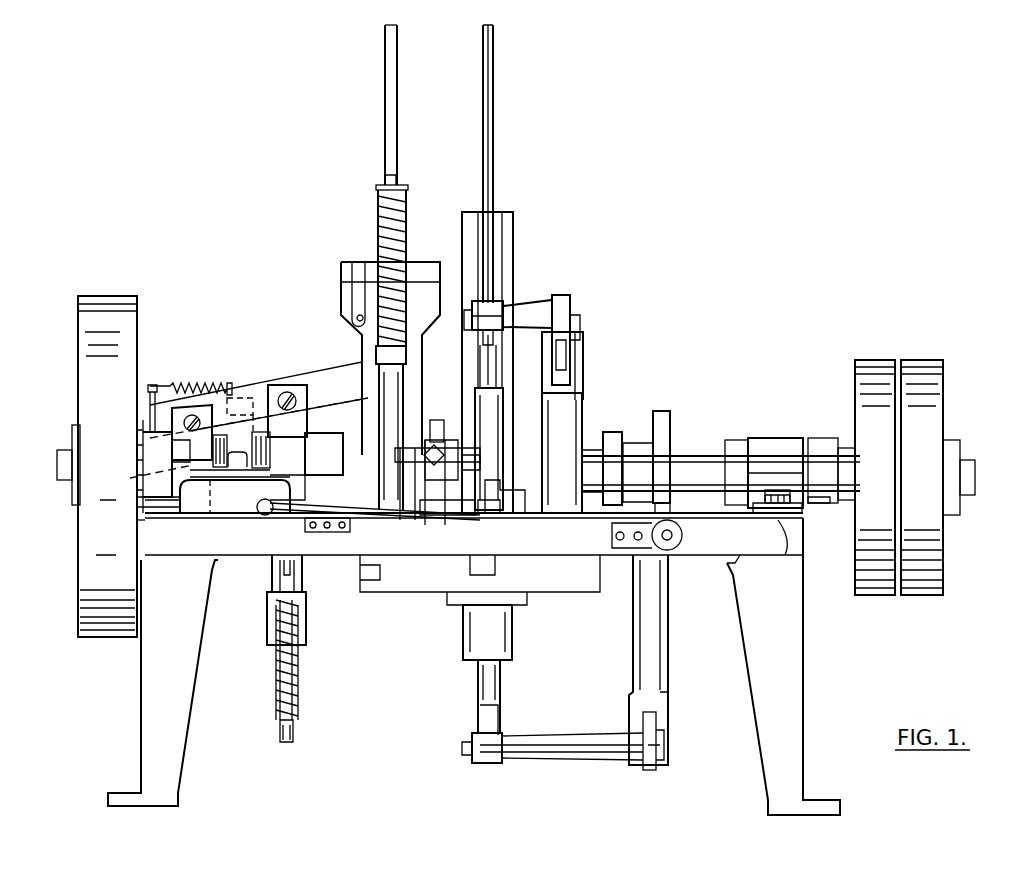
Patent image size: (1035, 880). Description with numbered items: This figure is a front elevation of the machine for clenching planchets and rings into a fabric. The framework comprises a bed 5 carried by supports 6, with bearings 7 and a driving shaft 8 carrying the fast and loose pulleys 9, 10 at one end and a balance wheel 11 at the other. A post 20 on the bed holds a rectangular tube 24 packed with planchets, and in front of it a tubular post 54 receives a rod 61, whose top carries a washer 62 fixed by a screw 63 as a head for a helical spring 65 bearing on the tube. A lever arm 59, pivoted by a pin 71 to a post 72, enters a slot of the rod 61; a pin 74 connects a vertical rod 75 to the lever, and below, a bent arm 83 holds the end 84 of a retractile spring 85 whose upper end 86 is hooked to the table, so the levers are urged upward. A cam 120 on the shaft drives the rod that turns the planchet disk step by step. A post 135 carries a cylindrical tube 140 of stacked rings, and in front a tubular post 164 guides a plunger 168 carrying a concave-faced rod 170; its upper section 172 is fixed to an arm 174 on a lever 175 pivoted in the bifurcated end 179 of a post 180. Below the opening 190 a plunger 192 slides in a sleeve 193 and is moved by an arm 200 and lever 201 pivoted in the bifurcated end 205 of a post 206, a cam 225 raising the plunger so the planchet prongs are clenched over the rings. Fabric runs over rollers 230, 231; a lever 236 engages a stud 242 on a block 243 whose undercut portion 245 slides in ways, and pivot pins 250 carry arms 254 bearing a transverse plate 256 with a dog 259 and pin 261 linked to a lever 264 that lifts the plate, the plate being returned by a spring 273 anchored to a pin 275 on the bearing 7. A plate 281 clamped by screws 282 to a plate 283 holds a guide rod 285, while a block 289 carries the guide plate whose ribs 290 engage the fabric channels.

The bed 5 is at (790, 540).
The supports 6 is at (150, 704).
The bearings 7 is at (165, 410).
The driving shaft 8 is at (66, 470).
The fast pulley 9 is at (930, 392).
The loose pulley 10 is at (875, 368).
The balance wheel 11 is at (95, 358).
The post 20 is at (368, 352).
The rectangular tube 24 is at (400, 108).
The tubular post 54 is at (395, 412).
The lever arm 59 is at (308, 380).
The rod 61 is at (406, 232).
The washer 62 is at (388, 190).
The screw 63 is at (398, 182).
The helical spring 65 is at (378, 232).
The pin 71 is at (194, 420).
The post 72 is at (185, 470).
The pin 74 is at (283, 398).
The vertical rod 75 is at (268, 573).
The bent arm 83 is at (300, 684).
The spring end 84 is at (295, 736).
The retractile spring 85 is at (278, 688).
The spring upper end 86 is at (300, 578).
The cam 120 is at (622, 440).
The post 135 is at (513, 232).
The cylindrical tube 140 is at (500, 135).
The tubular post 164 is at (500, 420).
The plunger 168 is at (485, 365).
The rod 170 is at (500, 495).
The upper section 172 is at (490, 303).
The arm 174 is at (530, 308).
The lever 175 is at (585, 330).
The bifurcated end 179 is at (585, 348).
The post 180 is at (565, 430).
The opening 190 is at (495, 520).
The plunger 192 is at (490, 692).
The sleeve 193 is at (500, 638).
The arm 200 is at (592, 745).
The lever 201 is at (672, 745).
The bifurcated end 205 is at (306, 613).
The post 206 is at (655, 644).
The cam 225 is at (665, 415).
The roller 230 is at (688, 540).
The roller 231 is at (305, 522).
The lever 236 is at (245, 413).
The stud 242 is at (262, 468).
The block 243 is at (198, 512).
The undercut portion 245 is at (137, 530).
The pivot pins 250 is at (262, 507).
The arms 254 is at (355, 520).
The transverse plate 256 is at (420, 520).
The dog 259 is at (405, 448).
The pin 261 is at (462, 463).
The lever 264 is at (455, 433).
The spring 273 is at (218, 390).
The pin 275 is at (150, 410).
The plate 281 is at (822, 500).
The screws 282 is at (775, 495).
The plate 283 is at (788, 560).
The guide rod 285 is at (690, 508).
The block 289 is at (372, 560).
The ribs 290 is at (505, 567).